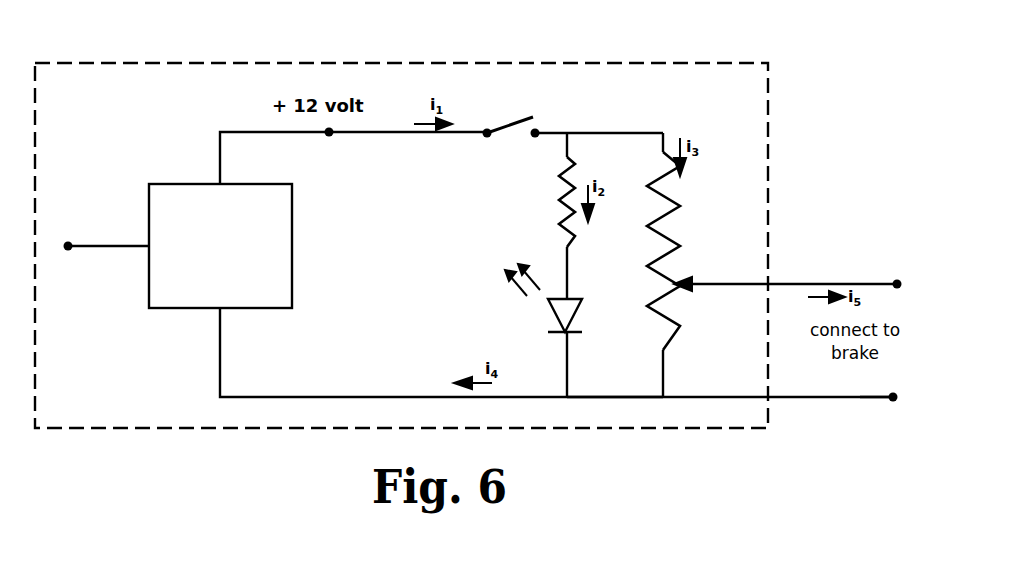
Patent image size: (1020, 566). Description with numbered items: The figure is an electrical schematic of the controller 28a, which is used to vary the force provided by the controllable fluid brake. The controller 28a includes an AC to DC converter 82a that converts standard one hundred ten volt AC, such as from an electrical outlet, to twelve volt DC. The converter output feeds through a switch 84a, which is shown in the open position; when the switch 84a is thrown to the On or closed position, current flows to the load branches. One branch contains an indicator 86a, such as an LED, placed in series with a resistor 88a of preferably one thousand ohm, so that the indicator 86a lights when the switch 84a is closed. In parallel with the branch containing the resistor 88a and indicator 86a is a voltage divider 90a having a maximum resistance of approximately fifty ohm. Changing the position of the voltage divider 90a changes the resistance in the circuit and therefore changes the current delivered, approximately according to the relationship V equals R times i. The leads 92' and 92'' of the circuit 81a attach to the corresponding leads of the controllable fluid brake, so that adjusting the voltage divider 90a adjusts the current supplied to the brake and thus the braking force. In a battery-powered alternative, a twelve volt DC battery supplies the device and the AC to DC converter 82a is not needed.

The controller 28a is at (650, 66).
The circuit 81a is at (586, 397).
The AC to DC converter 82a is at (292, 213).
The switch 84a is at (505, 128).
The indicator 86a is at (555, 298).
The resistor 88a is at (560, 180).
The voltage divider 90a is at (682, 270).
The lead 92' is at (867, 240).
The lead 92'' is at (858, 448).